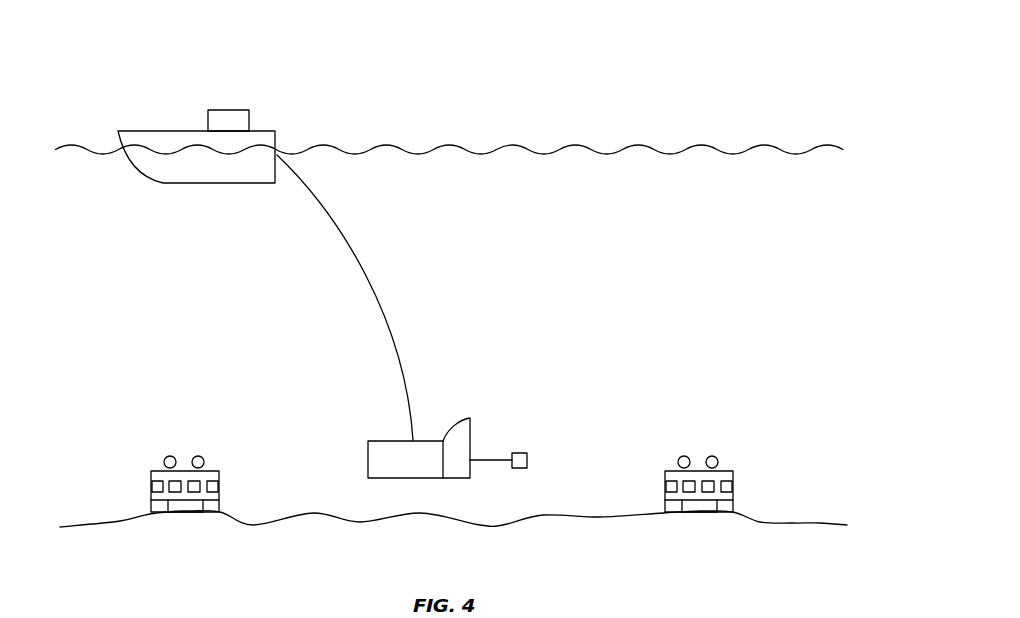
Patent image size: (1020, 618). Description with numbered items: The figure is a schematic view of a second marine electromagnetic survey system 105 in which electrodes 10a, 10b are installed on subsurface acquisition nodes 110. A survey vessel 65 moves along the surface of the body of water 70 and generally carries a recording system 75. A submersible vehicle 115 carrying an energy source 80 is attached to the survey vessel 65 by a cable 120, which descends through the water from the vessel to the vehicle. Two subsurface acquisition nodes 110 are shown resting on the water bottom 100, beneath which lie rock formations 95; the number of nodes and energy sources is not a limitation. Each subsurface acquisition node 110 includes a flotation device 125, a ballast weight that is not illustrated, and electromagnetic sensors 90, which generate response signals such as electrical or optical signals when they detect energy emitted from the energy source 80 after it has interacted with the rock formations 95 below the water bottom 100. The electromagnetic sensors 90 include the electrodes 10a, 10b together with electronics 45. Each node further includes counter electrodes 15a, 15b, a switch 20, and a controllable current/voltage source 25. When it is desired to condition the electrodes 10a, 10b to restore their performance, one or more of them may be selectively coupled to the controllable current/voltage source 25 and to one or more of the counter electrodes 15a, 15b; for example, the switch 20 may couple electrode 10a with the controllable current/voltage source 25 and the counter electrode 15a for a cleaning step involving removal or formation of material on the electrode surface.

The second marine electromagnetic survey system 105 is at (555, 64).
The body of water 70 is at (577, 186).
The survey vessel 65 is at (162, 130).
The recording system 75 is at (250, 125).
The cable 120 is at (380, 295).
The submersible vehicle 115 is at (389, 441).
The energy source 80 is at (521, 452).
The rock formations 95 is at (611, 550).
The water bottom 100 is at (818, 523).
The subsurface acquisition node 110 is at (130, 428).
The electromagnetic sensors 90 is at (224, 495).
The flotation device 125 is at (170, 456).
The counter electrode 15a is at (155, 478).
The switch 20 is at (168, 480).
The controllable current/voltage source 25 is at (200, 480).
The counter electrode 15b is at (213, 478).
The electrode 10a is at (155, 505).
The electrode 10b is at (220, 503).
The electronics 45 is at (183, 509).